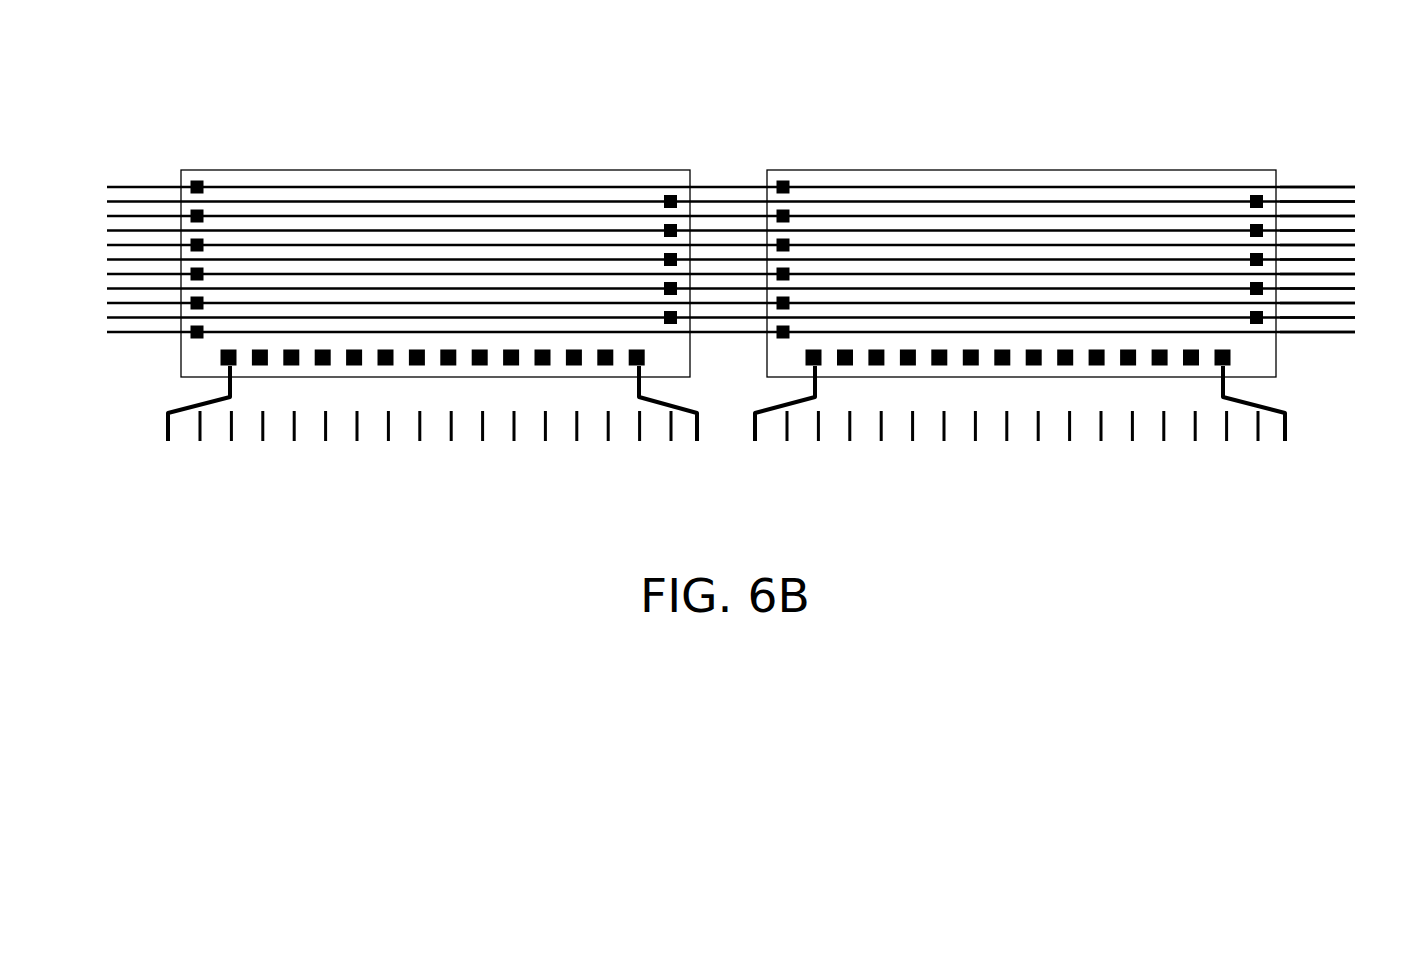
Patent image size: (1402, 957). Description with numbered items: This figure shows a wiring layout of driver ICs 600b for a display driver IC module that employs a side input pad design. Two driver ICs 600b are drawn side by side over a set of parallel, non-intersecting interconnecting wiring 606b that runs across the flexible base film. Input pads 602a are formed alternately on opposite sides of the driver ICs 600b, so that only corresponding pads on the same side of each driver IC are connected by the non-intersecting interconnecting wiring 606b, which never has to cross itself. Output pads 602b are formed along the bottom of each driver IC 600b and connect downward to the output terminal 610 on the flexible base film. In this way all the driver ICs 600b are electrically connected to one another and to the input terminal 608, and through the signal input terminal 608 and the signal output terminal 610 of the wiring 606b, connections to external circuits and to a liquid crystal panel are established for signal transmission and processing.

The driver ICs 600b is at (447, 170).
The input pads 602a is at (204, 186).
The output pads 602b is at (220, 358).
The non-intersecting interconnecting wiring 606b is at (1085, 247).
The input terminal 608 is at (1368, 208).
The output terminal 610 is at (1020, 468).